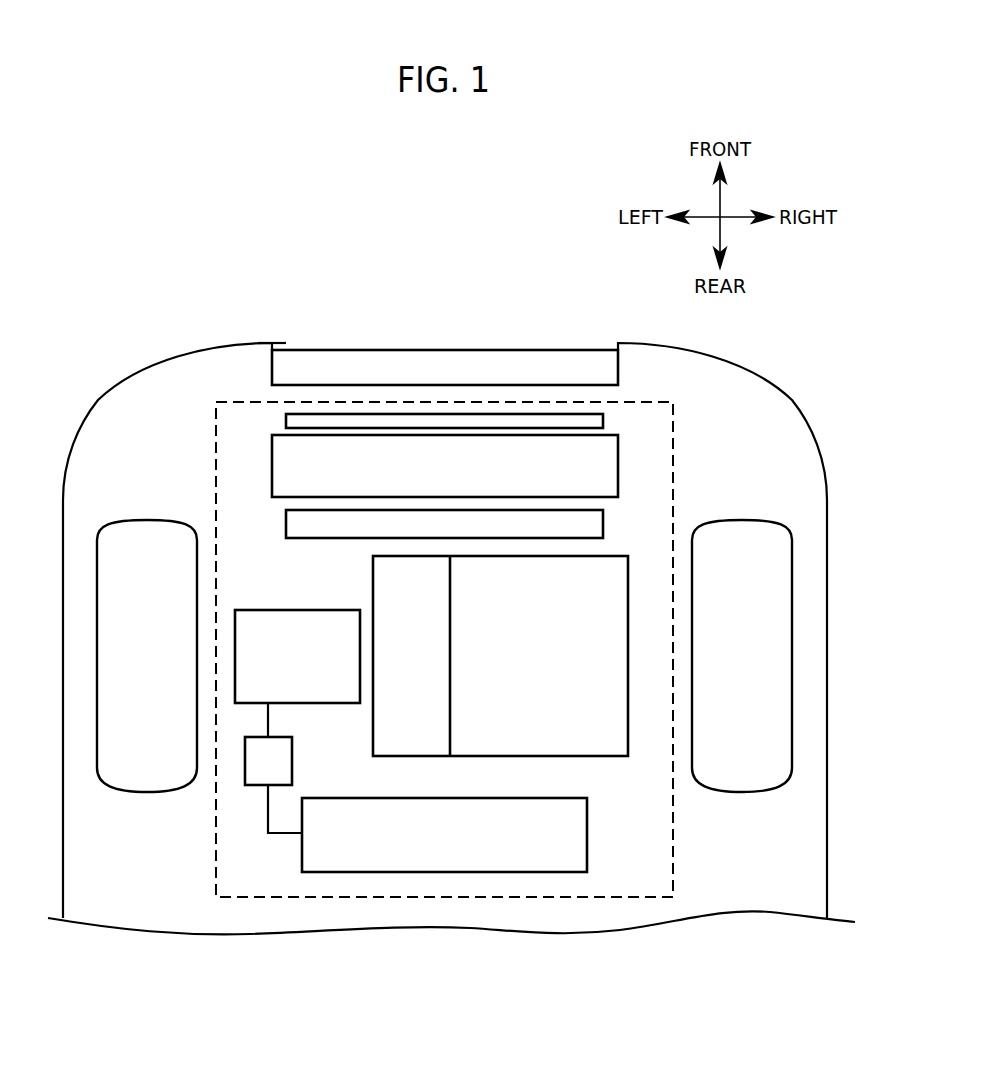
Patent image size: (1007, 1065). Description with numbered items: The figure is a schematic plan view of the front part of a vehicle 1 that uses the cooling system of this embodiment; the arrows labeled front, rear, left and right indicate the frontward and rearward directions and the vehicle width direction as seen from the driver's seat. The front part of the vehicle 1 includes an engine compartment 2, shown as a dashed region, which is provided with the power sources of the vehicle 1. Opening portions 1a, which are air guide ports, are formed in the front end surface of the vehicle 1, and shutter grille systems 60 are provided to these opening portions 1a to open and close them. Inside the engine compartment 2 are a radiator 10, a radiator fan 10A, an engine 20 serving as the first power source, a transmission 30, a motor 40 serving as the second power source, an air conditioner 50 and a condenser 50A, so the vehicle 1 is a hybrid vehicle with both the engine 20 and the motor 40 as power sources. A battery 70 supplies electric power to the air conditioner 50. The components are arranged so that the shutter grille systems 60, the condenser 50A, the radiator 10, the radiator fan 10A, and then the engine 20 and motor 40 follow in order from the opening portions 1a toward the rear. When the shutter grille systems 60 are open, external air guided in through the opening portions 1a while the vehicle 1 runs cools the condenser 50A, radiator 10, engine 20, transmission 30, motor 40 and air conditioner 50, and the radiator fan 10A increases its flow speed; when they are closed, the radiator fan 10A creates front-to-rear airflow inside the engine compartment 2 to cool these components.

The vehicle 1 is at (140, 347).
The opening portions 1a is at (273, 343).
The engine compartment 2 is at (216, 455).
The radiator 10 is at (618, 468).
The radiator fan 10A is at (603, 525).
The engine 20 is at (603, 740).
The transmission 30 is at (400, 733).
The motor 40 is at (297, 621).
The air conditioner 50 is at (577, 840).
The condenser 50A is at (603, 418).
The shutter grille systems 60 is at (445, 366).
The battery 70 is at (258, 786).